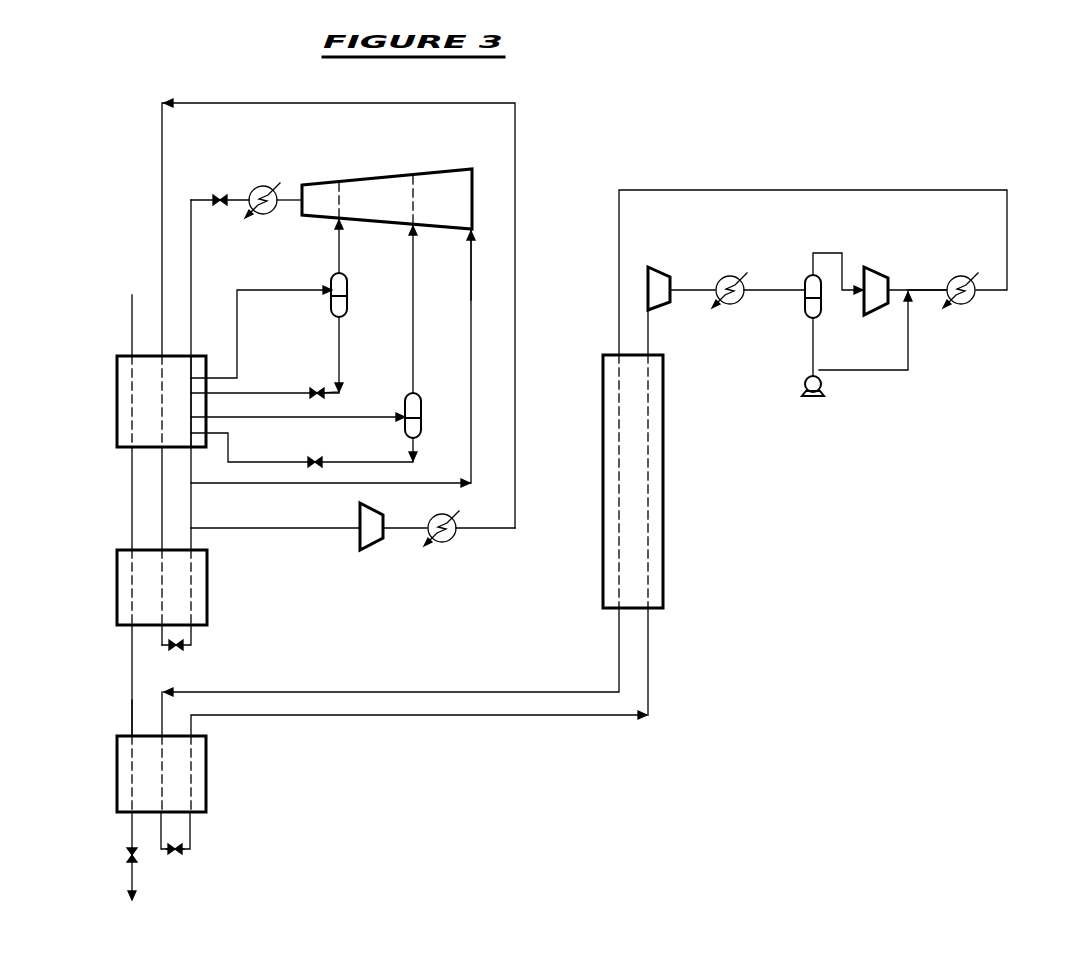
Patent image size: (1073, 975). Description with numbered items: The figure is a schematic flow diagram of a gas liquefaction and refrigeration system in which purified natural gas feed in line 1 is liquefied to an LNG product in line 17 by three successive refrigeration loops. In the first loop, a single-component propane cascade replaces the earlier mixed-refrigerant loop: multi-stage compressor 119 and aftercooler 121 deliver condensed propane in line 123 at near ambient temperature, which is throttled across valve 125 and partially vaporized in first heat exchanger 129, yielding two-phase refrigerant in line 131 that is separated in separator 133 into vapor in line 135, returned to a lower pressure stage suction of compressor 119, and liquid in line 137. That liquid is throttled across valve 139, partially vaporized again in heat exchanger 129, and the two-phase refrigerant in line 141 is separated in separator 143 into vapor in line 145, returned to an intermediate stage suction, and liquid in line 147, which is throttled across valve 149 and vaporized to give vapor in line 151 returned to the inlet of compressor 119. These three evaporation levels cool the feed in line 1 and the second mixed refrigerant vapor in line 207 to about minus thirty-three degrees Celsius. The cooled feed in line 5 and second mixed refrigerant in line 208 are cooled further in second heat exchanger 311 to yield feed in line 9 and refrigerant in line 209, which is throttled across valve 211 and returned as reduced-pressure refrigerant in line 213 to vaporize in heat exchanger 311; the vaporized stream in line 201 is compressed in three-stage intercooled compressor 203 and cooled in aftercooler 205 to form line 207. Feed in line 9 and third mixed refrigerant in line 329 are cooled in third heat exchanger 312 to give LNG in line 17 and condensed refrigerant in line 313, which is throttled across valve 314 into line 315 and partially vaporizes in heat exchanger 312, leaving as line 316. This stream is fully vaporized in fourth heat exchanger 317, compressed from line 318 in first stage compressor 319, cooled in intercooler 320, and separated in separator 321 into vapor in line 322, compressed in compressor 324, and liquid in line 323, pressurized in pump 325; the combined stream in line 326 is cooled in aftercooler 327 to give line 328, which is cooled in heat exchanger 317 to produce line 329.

The feed gas line 1 is at (132, 310).
The cooled feed line 5 is at (132, 492).
The further cooled feed line 9 is at (132, 724).
The LNG product line 17 is at (132, 882).
The multi-stage compressor 119 is at (472, 170).
The aftercooler 121 is at (266, 184).
The compressed refrigerant line 123 is at (216, 197).
The throttling valve 125 is at (218, 204).
The first heat exchanger 129 is at (117, 402).
The two-phase refrigerant line 131 is at (237, 322).
The separator 133 is at (348, 282).
The vapor line 135 is at (338, 262).
The liquid line 137 is at (340, 378).
The throttling valve 139 is at (314, 390).
The two-phase refrigerant line 141 is at (253, 418).
The separator 143 is at (422, 408).
The vapor line 145 is at (412, 338).
The liquid line 147 is at (360, 462).
The throttling valve 149 is at (310, 432).
The vapor line 151 is at (471, 375).
The vaporized second mixed refrigerant line 201 is at (260, 529).
The three-stage intercooled compressor 203 is at (360, 552).
The aftercooler 205 is at (455, 544).
The cooled compressed mixed refrigerant line 207 is at (162, 200).
The second mixed refrigerant line 208 is at (191, 493).
The further cooled second mixed refrigerant line 209 is at (132, 650).
The valve 211 is at (172, 650).
The reduced-pressure mixed refrigerant line 213 is at (191, 644).
The second heat exchanger 311 is at (117, 590).
The third heat exchanger 312 is at (117, 776).
The condensed third mixed refrigerant line 313 is at (161, 852).
The valve 314 is at (180, 856).
The reduced-pressure third mixed refrigerant line 315 is at (190, 828).
The partially-vaporized refrigerant line 316 is at (262, 716).
The fourth heat exchanger 317 is at (663, 566).
The vaporized refrigerant line 318 is at (648, 350).
The first stage compressor 319 is at (649, 266).
The water-cooled intercooler 320 is at (726, 278).
The separator 321 is at (804, 312).
The refrigerant vapor line 322 is at (822, 253).
The refrigerant liquid line 323 is at (806, 352).
The compressor 324 is at (864, 266).
The pump 325 is at (806, 390).
The combined stream line 326 is at (910, 288).
The water-cooled aftercooler 327 is at (958, 304).
The cooled mixed refrigerant line 328 is at (800, 190).
The third mixed refrigerant line 329 is at (302, 692).